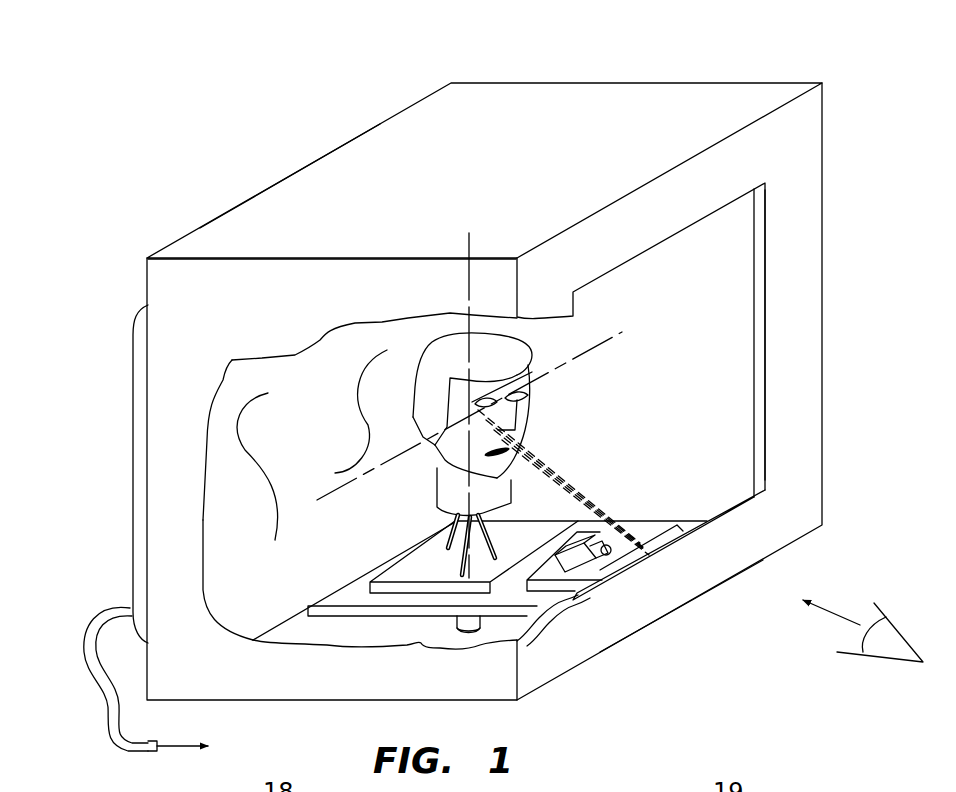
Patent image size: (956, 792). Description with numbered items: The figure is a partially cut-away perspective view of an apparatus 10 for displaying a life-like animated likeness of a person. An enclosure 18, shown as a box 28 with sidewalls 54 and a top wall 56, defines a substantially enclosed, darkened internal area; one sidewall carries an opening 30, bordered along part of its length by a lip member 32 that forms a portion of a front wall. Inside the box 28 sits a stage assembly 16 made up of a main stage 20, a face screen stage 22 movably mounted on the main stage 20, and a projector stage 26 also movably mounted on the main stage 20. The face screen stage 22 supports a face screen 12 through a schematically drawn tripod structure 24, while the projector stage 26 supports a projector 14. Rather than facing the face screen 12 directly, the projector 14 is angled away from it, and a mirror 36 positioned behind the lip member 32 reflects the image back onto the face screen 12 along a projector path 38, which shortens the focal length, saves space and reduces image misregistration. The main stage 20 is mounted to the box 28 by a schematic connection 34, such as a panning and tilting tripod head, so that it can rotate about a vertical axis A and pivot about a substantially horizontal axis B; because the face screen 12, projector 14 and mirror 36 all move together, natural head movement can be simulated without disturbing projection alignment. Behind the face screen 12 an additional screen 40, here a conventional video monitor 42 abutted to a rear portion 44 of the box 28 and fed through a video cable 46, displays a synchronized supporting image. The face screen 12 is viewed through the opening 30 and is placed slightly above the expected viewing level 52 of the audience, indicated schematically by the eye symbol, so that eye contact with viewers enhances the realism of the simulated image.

The apparatus 10 is at (232, 168).
The face screen 12 is at (568, 397).
The projector 14 is at (615, 605).
The stage assembly 16 is at (258, 605).
The enclosure 18 is at (776, 76).
The main stage 20 is at (350, 588).
The face screen stage 22 is at (413, 562).
The tripod structure 24 is at (545, 538).
The projector stage 26 is at (582, 577).
The box 28 is at (378, 124).
The opening 30 is at (725, 363).
The lip member 32 is at (728, 573).
The connection 34 is at (470, 633).
The mirror 36 is at (675, 527).
The projector path 38 is at (625, 515).
The additional screen 40 is at (328, 410).
The video monitor 42 is at (135, 470).
The rear portion 44 is at (118, 551).
The video cable 46 is at (108, 695).
The viewing level 52 is at (885, 674).
The sidewalls 54 is at (823, 178).
The top wall 56 is at (475, 166).
The vertical axis A is at (469, 246).
The horizontal axis B is at (605, 333).